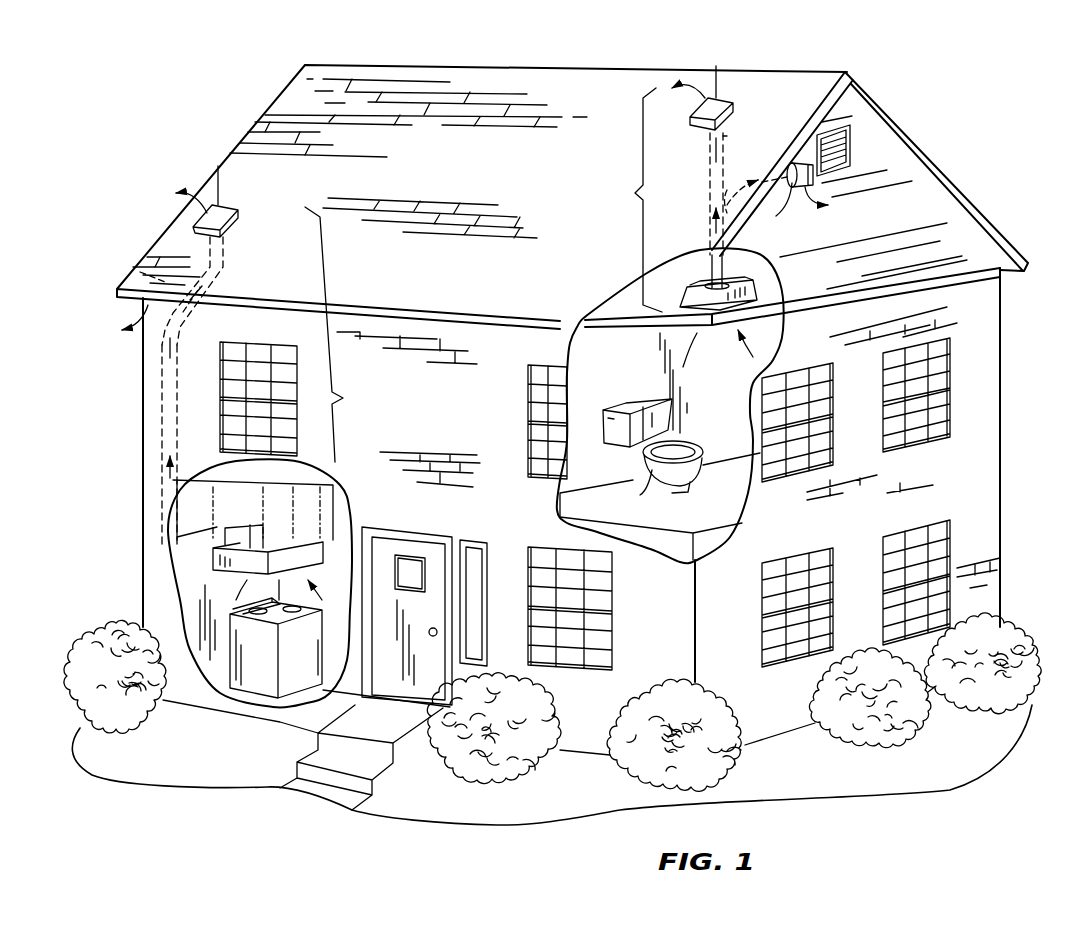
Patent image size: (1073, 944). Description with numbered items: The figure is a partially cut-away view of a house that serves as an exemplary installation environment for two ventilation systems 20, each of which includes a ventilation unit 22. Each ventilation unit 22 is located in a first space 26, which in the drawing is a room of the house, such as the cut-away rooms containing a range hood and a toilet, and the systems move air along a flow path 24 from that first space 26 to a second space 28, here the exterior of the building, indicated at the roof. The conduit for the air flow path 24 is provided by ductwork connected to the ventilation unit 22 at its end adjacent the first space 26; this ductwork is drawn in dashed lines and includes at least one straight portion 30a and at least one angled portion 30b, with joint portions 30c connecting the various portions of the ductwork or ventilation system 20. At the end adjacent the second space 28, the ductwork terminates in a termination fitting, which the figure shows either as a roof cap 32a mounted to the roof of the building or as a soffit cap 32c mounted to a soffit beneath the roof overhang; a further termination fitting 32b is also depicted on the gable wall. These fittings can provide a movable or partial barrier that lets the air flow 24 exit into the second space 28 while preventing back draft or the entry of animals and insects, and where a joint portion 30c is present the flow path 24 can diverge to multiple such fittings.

The ventilation system 20 is at (483, 275).
The ventilation unit 22 is at (212, 578).
The flow path 24 is at (166, 360).
The first space 26 is at (204, 641).
The second space 28 is at (494, 50).
The straight portion 30a is at (727, 136).
The angled portion 30b is at (727, 190).
The joint portion 30c is at (733, 207).
The roof cap 32a is at (210, 207).
The wall vent 32b is at (805, 162).
The soffit cap 32c is at (150, 283).